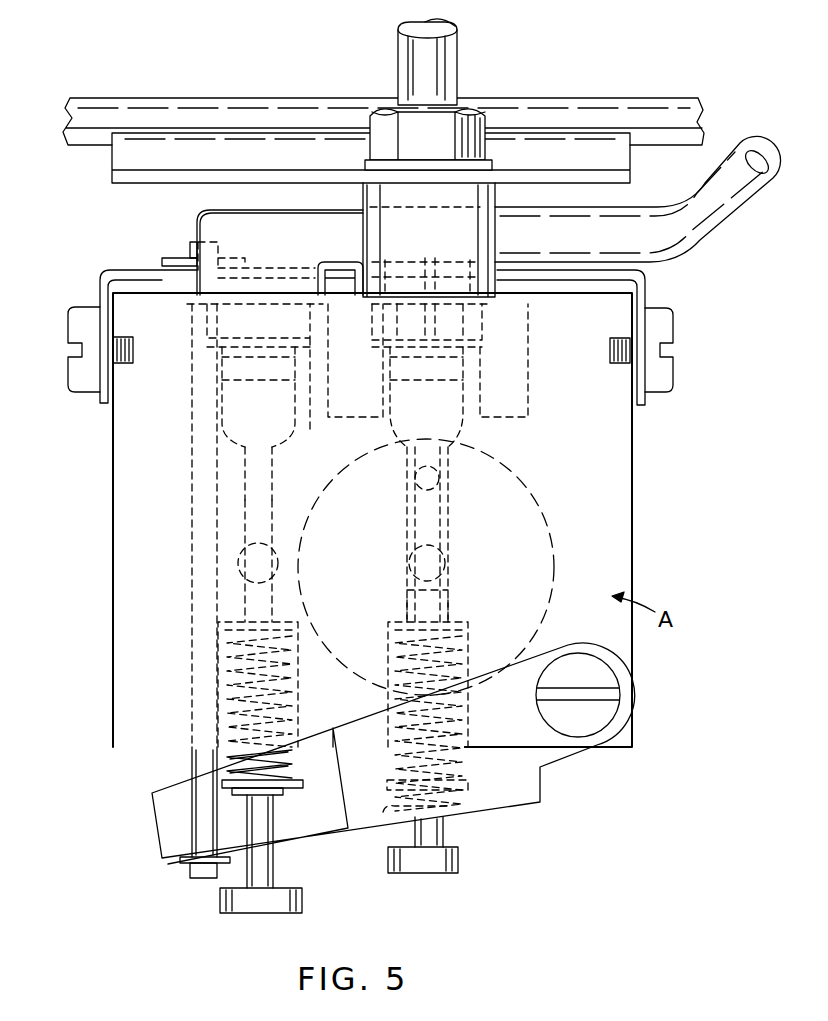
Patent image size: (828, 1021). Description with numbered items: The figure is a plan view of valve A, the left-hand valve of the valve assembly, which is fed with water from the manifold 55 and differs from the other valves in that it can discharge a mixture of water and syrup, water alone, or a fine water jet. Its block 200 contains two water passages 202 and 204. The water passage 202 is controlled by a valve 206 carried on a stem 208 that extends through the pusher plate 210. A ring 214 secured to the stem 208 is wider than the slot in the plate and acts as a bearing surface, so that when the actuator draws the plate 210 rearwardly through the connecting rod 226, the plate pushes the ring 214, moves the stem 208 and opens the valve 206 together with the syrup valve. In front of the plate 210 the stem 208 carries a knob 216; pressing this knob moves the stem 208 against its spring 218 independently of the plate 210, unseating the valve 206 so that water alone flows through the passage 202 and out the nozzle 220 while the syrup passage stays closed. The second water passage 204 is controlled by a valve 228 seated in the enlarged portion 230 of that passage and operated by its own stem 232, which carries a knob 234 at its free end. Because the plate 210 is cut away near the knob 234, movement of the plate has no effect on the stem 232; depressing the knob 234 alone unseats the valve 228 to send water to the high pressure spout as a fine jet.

The manifold 55 is at (330, 241).
The block 200 is at (113, 538).
The water passage 202 is at (449, 510).
The second water passage 204 is at (272, 463).
The valve 206 is at (457, 424).
The stem 208 is at (440, 603).
The pusher plate 210 is at (510, 812).
The ring 214 is at (383, 812).
The knob 216 is at (468, 866).
The spring 218 is at (468, 652).
The nozzle 220 is at (548, 532).
The connecting rod 226 is at (192, 760).
The valve 228 is at (233, 419).
The enlarged portion 230 is at (210, 397).
The stem 232 is at (247, 507).
The knob 234 is at (220, 905).